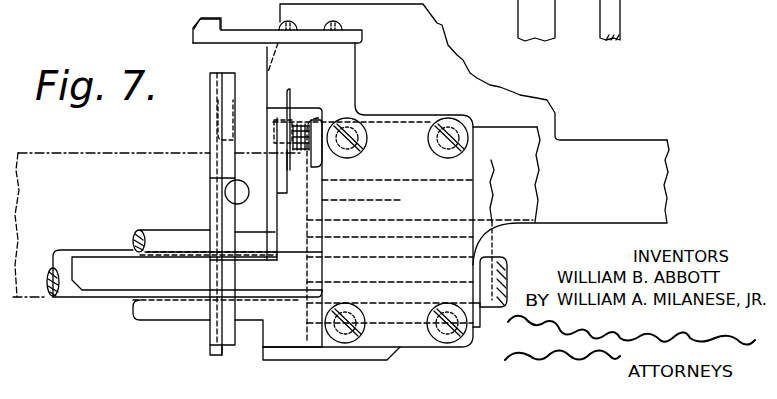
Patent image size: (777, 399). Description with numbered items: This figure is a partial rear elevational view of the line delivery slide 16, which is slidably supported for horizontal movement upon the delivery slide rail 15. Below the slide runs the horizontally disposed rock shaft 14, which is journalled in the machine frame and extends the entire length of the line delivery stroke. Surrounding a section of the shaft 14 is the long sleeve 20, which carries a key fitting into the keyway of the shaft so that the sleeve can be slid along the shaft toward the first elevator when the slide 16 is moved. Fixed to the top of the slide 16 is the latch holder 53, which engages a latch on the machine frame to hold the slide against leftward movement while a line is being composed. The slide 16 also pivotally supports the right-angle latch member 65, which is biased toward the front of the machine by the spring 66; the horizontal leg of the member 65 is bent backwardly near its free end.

The rock shaft 14 is at (68, 288).
The delivery slide rail 15 is at (133, 153).
The line delivery slide 16 is at (406, 130).
The long sleeve 20 is at (171, 234).
The latch holder 53 is at (204, 31).
The right-angle latch member 65 is at (286, 278).
The spring 66 is at (300, 125).